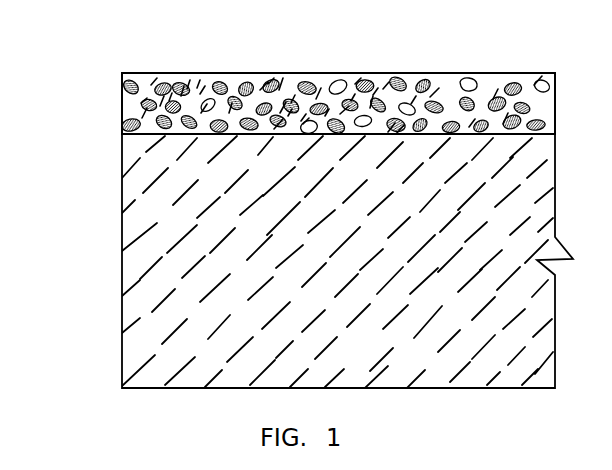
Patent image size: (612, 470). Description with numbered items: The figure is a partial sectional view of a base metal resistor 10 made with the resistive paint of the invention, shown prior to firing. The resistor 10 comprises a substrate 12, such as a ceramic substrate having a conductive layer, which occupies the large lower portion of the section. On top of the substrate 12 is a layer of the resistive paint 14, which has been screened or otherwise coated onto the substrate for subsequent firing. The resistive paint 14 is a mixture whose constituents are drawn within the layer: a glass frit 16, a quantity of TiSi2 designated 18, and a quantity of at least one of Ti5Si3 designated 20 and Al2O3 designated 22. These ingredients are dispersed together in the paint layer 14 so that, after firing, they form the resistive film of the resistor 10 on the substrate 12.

The base metal resistor 10 is at (107, 145).
The substrate 12 is at (122, 230).
The resistive paint 14 is at (122, 97).
The glass frit 16 is at (178, 84).
The quantity of TiSi2 18 is at (270, 81).
The quantity of Ti5Si3 20 is at (394, 79).
The quantity of Al2O3 22 is at (470, 79).